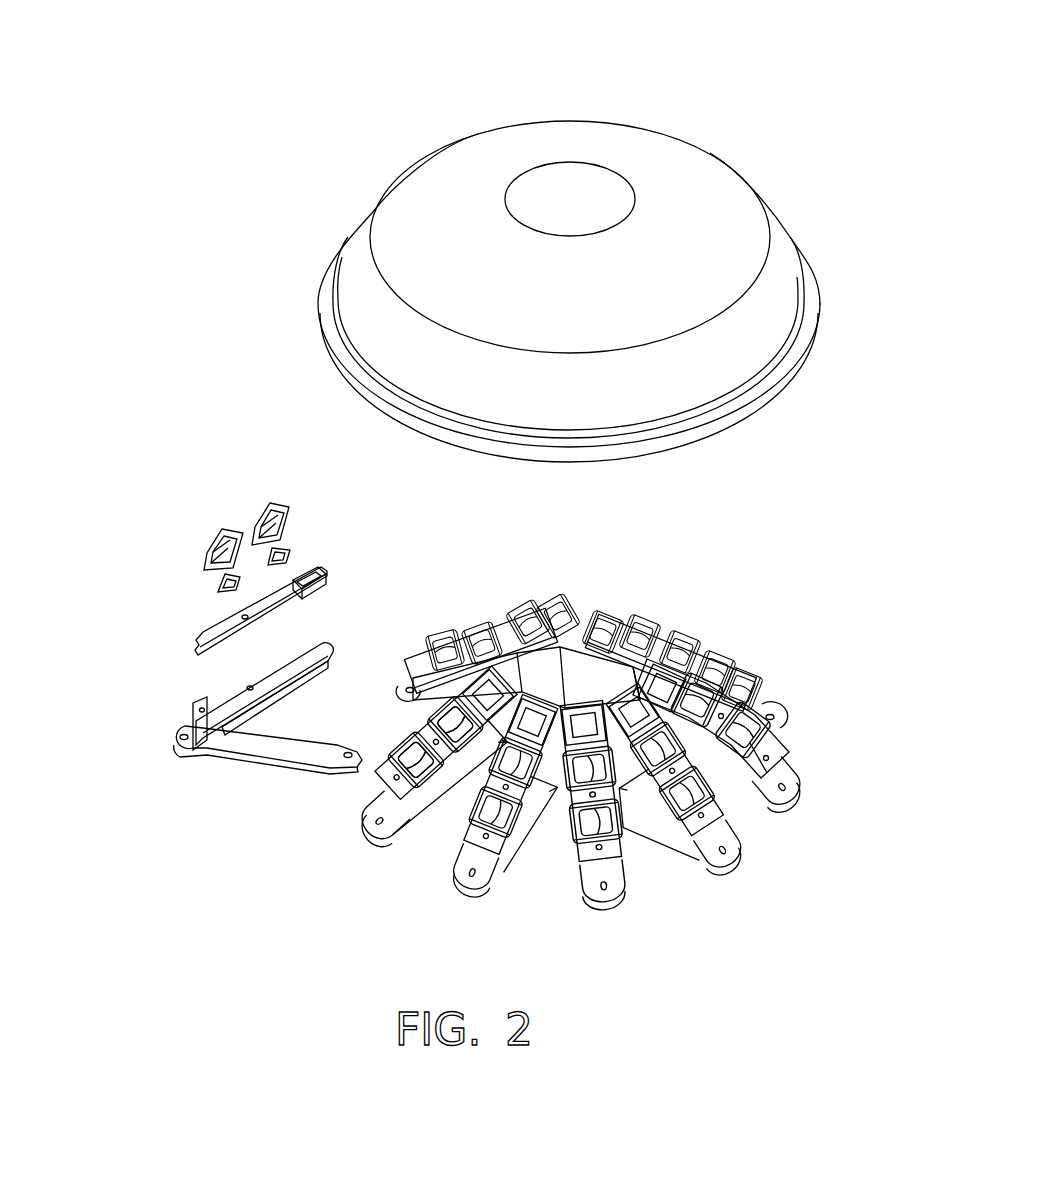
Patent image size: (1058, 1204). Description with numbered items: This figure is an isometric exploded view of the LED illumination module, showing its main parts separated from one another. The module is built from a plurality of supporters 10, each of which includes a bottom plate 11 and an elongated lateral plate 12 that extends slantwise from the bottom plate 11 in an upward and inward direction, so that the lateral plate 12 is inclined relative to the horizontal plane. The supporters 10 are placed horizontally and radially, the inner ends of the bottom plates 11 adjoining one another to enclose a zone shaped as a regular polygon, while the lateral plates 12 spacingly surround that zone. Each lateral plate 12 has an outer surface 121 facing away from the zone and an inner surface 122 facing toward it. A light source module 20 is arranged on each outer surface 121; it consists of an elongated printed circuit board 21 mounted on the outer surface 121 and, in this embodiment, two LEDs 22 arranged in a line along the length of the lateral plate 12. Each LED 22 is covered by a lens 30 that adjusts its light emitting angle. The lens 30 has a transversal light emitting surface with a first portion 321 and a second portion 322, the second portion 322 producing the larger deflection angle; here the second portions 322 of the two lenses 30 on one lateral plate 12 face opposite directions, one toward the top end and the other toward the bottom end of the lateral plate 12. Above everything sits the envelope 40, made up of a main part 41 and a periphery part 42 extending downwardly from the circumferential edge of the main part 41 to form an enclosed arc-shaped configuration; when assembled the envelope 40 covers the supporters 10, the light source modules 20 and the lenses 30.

The supporter 10 is at (241, 701).
The bottom plate 11 is at (253, 760).
The lateral plate 12 is at (262, 680).
The outer surface 121 is at (292, 668).
The inner surface 122 is at (285, 700).
The light source module 20 is at (212, 611).
The printed circuit board 21 is at (217, 631).
The LED 22 is at (192, 584).
The lens 30 is at (228, 533).
The first portion 321 is at (377, 767).
The second portion 322 is at (438, 718).
The envelope 40 is at (569, 239).
The main part 41 is at (682, 170).
The periphery part 42 is at (781, 264).